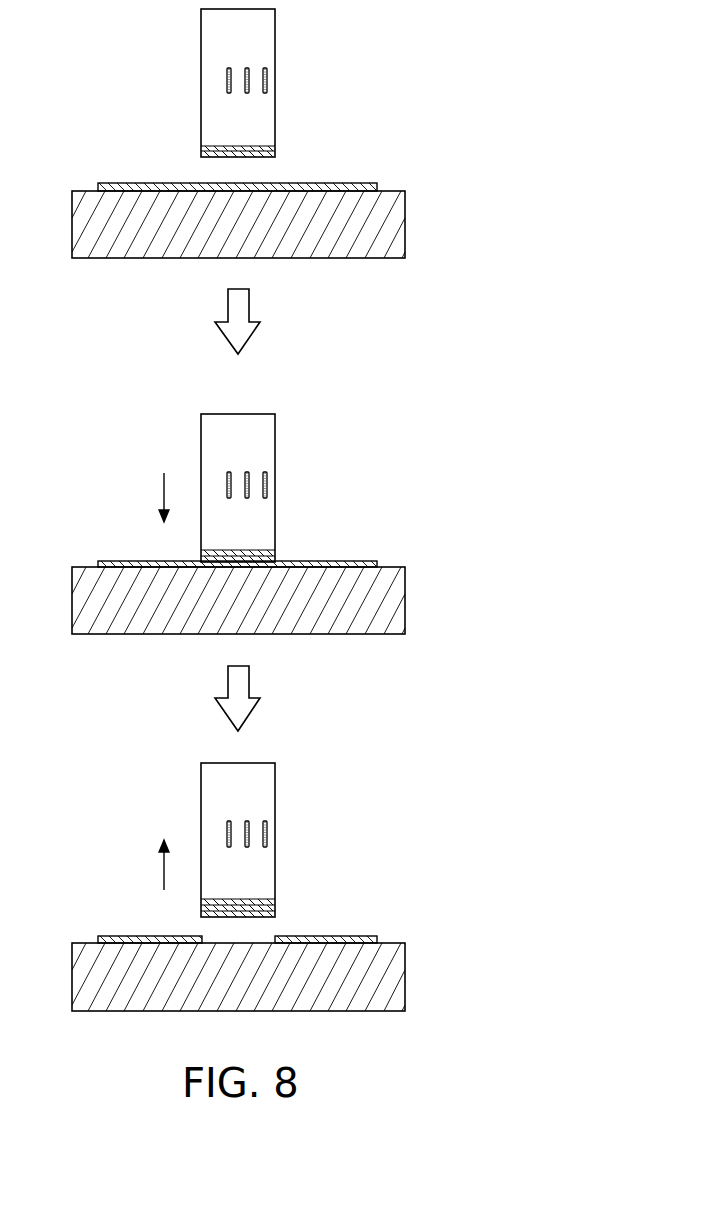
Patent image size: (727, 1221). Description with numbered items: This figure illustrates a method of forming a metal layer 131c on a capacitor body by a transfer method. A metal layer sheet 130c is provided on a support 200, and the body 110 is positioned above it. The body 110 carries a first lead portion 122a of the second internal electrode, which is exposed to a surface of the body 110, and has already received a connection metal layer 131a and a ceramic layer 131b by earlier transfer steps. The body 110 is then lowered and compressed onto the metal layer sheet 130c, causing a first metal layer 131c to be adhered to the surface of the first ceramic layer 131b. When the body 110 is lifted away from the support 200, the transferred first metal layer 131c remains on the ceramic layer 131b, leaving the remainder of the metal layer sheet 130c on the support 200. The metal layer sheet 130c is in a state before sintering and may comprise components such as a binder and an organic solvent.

The body 110 is at (275, 78).
The first lead portion 122a is at (267, 71).
The connection metal layer 131a is at (275, 148).
The ceramic layer 131b is at (275, 155).
The metal layer 131c is at (275, 914).
The metal layer sheet 130c is at (377, 186).
The support 200 is at (405, 221).